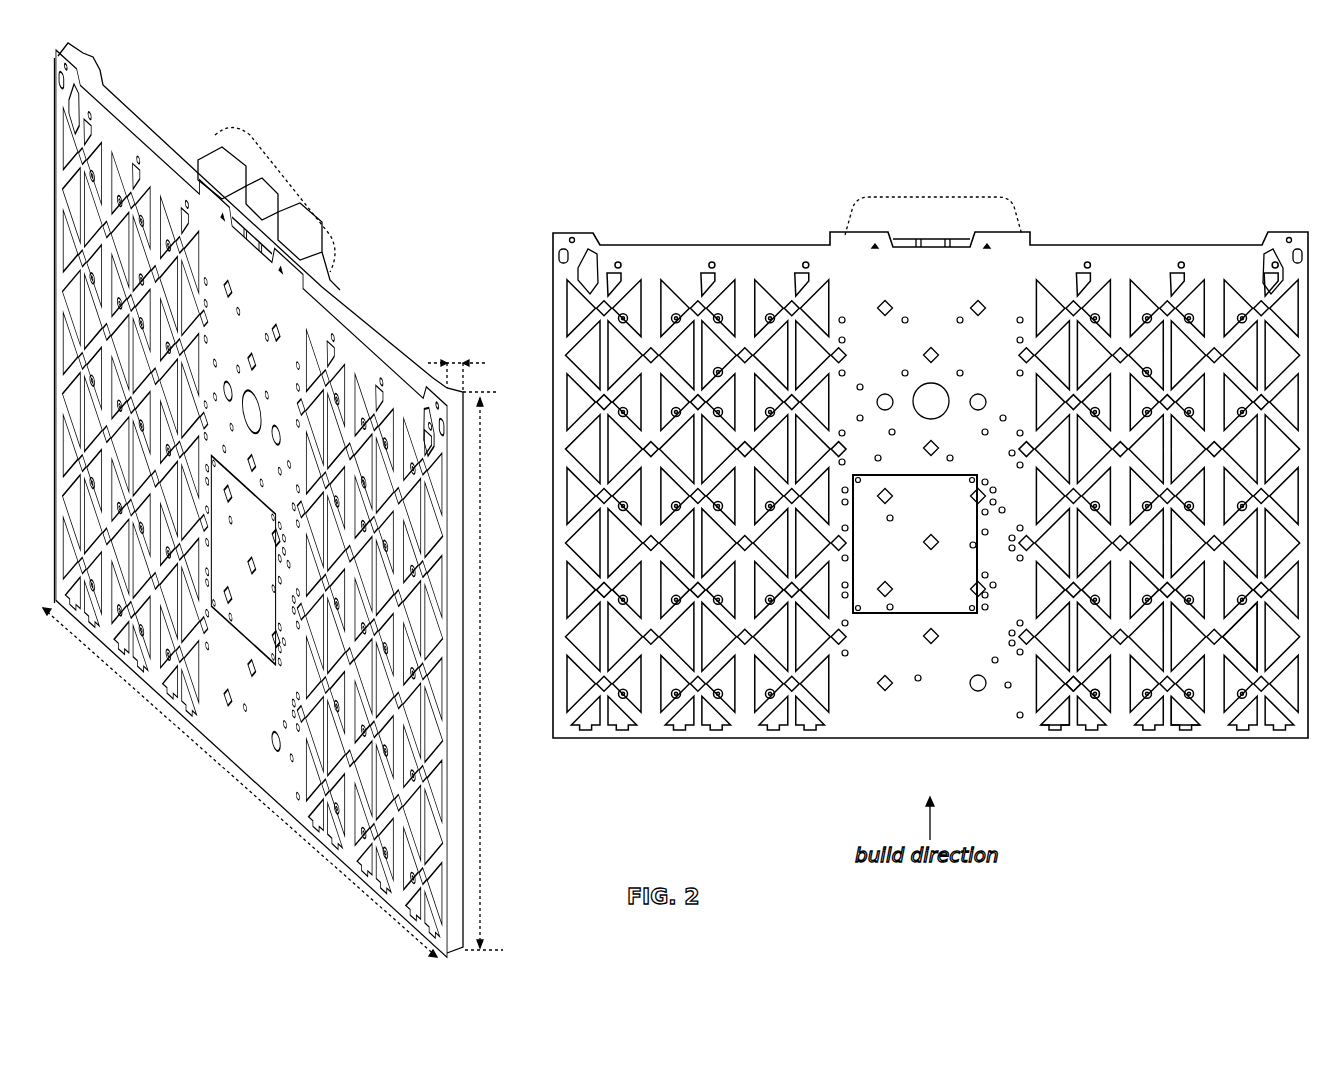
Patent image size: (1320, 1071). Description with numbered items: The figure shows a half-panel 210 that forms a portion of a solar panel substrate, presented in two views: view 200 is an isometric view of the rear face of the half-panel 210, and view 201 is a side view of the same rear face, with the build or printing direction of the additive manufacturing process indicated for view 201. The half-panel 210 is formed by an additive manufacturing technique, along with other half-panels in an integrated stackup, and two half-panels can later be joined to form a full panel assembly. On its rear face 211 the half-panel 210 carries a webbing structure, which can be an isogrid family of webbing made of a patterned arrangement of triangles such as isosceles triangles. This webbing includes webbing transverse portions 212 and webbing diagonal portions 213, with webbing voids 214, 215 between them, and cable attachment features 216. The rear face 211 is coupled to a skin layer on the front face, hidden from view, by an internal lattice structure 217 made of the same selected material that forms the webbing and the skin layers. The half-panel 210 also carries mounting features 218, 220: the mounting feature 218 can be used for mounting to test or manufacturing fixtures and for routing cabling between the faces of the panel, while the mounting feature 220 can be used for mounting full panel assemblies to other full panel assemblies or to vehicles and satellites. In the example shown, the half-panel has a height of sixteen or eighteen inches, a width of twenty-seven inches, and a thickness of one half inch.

The view 200 is at (250, 78).
The view 201 is at (713, 528).
The half-panel 210 is at (706, 216).
The rear face 211 is at (952, 720).
The webbing transverse portions 212 is at (1122, 695).
The webbing diagonal portions 213 is at (1185, 728).
The webbing void 214 is at (1058, 720).
The webbing void 215 is at (1068, 692).
The cable attachment feature 216 is at (1095, 702).
The internal lattice structure 217 is at (1230, 672).
The mounting feature 218 is at (937, 408).
The mounting feature 220 is at (932, 232).